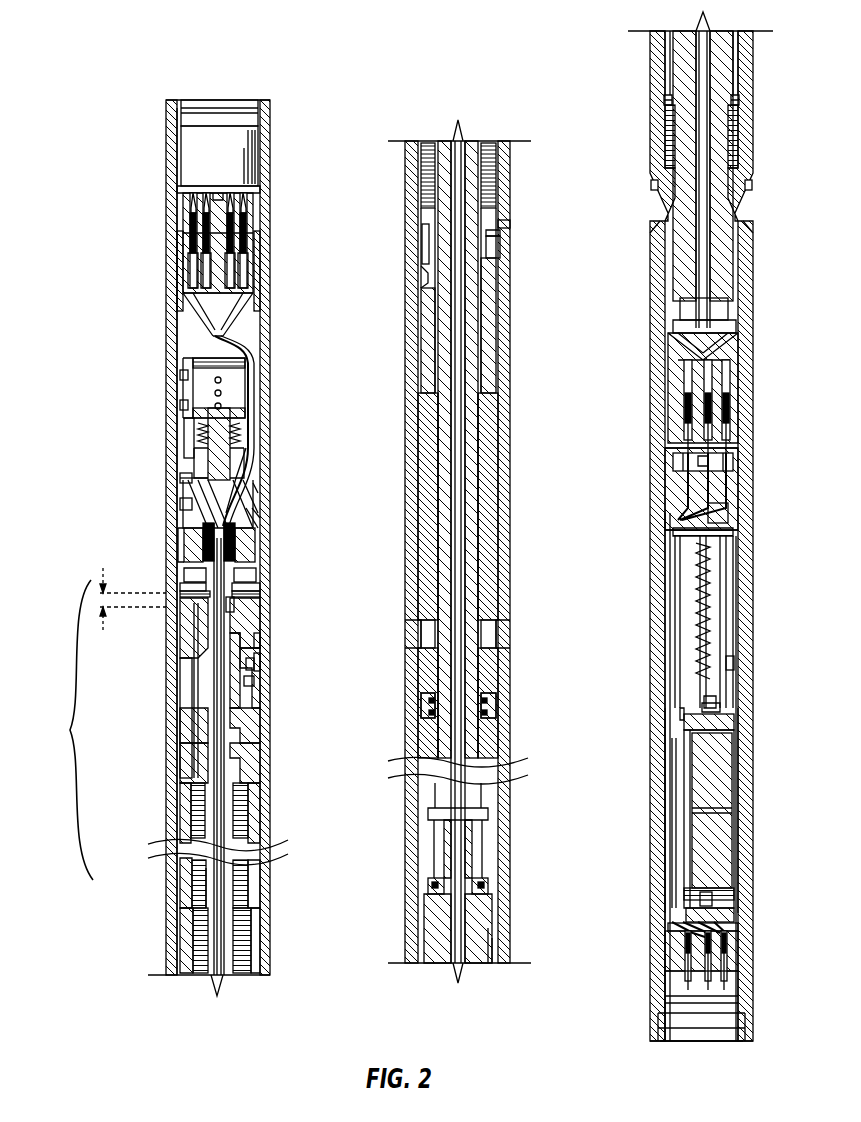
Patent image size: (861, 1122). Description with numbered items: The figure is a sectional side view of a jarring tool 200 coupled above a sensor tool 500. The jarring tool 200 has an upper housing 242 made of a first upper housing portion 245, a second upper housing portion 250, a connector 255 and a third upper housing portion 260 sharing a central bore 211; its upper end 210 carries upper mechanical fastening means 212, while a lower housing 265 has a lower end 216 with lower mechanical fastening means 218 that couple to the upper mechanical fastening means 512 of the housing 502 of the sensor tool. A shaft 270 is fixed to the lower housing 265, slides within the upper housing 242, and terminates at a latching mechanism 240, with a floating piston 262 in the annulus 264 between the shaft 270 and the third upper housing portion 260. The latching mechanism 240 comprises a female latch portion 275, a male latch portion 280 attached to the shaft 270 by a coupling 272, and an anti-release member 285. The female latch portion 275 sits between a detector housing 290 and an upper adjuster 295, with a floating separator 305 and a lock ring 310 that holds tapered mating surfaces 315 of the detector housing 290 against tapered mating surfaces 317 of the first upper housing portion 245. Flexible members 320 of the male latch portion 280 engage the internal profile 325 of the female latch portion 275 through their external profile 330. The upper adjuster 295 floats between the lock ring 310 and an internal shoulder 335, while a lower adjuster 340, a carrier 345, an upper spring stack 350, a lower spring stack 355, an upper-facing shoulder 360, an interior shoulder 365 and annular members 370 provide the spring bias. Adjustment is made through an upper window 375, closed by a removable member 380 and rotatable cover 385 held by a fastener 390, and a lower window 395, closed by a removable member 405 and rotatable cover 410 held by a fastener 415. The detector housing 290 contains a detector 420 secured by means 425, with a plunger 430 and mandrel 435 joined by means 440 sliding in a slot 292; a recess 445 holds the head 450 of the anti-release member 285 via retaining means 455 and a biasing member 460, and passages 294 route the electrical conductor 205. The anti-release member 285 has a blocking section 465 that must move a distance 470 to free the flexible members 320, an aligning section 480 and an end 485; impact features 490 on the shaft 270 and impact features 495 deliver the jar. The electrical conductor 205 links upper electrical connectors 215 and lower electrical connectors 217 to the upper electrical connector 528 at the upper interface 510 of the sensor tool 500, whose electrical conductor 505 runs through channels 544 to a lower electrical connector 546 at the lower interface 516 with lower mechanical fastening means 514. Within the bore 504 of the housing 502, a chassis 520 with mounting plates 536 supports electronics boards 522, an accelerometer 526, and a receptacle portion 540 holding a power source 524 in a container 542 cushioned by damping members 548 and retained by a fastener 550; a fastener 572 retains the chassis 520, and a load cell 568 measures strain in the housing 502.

The jarring tool 200 is at (116, 76).
The electrical conductor 205 is at (232, 338).
The upper end 210 is at (254, 118).
The central bore 211 is at (180, 335).
The upper mechanical fastening means 212 is at (250, 148).
The upper electrical connector 215 is at (243, 212).
The lower end 216 is at (648, 510).
The lower electrical connector 217 is at (728, 438).
The lower mechanical fastening means 218 is at (652, 470).
The latching mechanism 240 is at (57, 730).
The upper housing 242 is at (152, 440).
The first upper housing portion 245 is at (256, 255).
The second upper housing portion 250 is at (172, 908).
The connector 255 is at (502, 438).
The third upper housing portion 260 is at (500, 650).
The floating piston 262 is at (482, 695).
The annulus 264 is at (478, 800).
The lower housing 265 is at (736, 290).
The shaft 270 is at (465, 722).
The coupling 272 is at (248, 798).
The female latch portion 275 is at (250, 622).
The male latch portion 280 is at (236, 720).
The anti-release member 285 is at (228, 700).
The detector housing 290 is at (247, 490).
The slot 292 is at (174, 470).
The passages 294 is at (226, 465).
The upper adjuster 295 is at (250, 736).
The floating separator 305 is at (244, 583).
The lock ring 310 is at (230, 560).
The tapered mating surfaces 315 is at (248, 505).
The tapered mating surfaces 317 is at (176, 497).
The flexible members 320 is at (250, 604).
The internal profile 325 is at (185, 610).
The external profile 330 is at (180, 580).
The internal shoulder 335 is at (182, 734).
The lower adjuster 340 is at (478, 292).
The carrier 345 is at (243, 868).
The upper spring stack 350 is at (242, 812).
The lower spring stack 355 is at (245, 946).
The upper-facing shoulder 360 is at (182, 768).
The interior shoulder 365 is at (180, 790).
The annular members 370 is at (240, 780).
The upper window 375 is at (270, 656).
The removable member 380 is at (252, 652).
The rotatable cover 385 is at (253, 634).
The fastener 390 is at (250, 680).
The lower window 395 is at (518, 250).
The removable member 405 is at (498, 265).
The rotatable cover 410 is at (500, 330).
The fastener 415 is at (500, 218).
The detector 420 is at (222, 372).
The securing means 425 is at (172, 397).
The plunger 430 is at (228, 400).
The mandrel 435 is at (232, 448).
The coupling means 440 is at (178, 432).
The recess 445 is at (236, 572).
The head 450 is at (205, 540).
The retaining means 455 is at (186, 548).
The biasing member 460 is at (228, 528).
The blocking section 465 is at (228, 592).
The distance 470 is at (95, 568).
The aligning section 480 is at (187, 673).
The end 485 is at (182, 870).
The impact features 490 is at (482, 925).
The impact features 495 is at (658, 92).
The sensor tool 500 is at (606, 1003).
The housing 502 is at (734, 690).
The bore 504 is at (720, 618).
The electrical conductor 505 is at (664, 770).
The upper interface 510 is at (742, 455).
The upper mechanical fastening means 512 is at (722, 500).
The lower mechanical fastening means 514 is at (734, 988).
The lower interface 516 is at (678, 1008).
The chassis 520 is at (668, 608).
The electronics boards 522 is at (700, 596).
The power source 524 is at (715, 752).
The accelerometer 526 is at (708, 697).
The upper electrical connector 528 is at (720, 484).
The mounting plates 536 is at (674, 703).
The receptacle portion 540 is at (708, 800).
The container 542 is at (674, 735).
The channels 544 is at (660, 846).
The lower electrical connector 546 is at (727, 953).
The damping members 548 is at (716, 720).
The fastener 550 is at (718, 902).
The load cell 568 is at (728, 655).
The fastener 572 is at (730, 916).